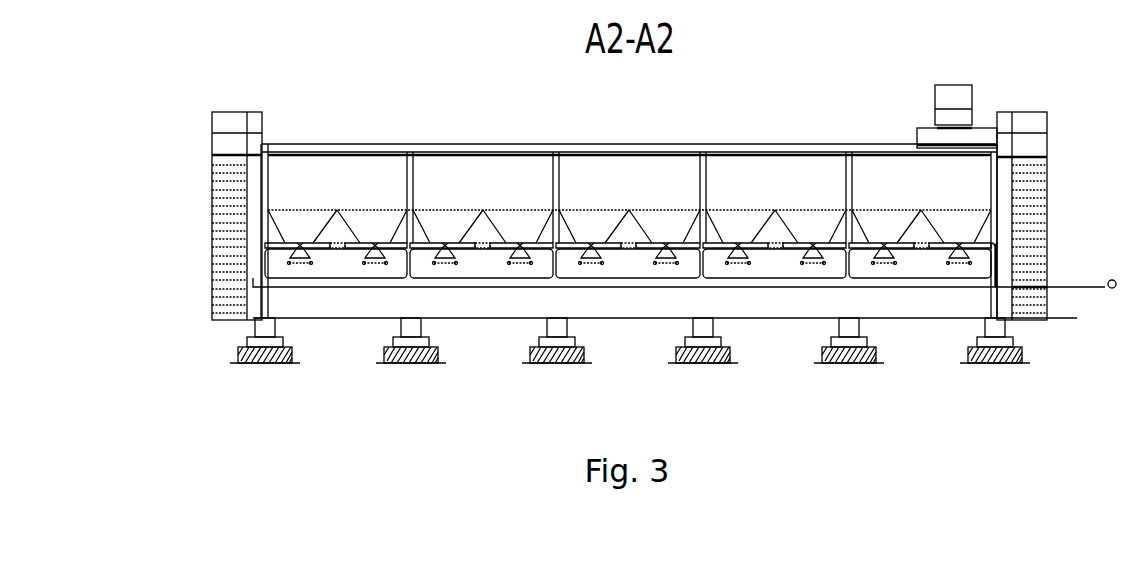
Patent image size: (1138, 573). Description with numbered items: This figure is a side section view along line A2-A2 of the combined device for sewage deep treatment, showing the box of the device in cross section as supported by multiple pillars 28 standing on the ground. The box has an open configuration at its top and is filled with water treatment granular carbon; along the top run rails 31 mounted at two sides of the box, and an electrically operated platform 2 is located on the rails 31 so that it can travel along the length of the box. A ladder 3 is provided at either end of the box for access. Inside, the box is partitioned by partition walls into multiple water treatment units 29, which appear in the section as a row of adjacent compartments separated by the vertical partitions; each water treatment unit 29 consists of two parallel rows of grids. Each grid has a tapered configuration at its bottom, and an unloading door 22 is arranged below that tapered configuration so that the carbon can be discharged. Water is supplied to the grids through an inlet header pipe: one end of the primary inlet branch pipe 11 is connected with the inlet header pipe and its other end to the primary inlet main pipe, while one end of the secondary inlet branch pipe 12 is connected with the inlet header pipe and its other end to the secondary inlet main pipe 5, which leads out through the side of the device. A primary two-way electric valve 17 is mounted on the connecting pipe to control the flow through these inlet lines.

The electrically operated platform 2 is at (953, 102).
The ladder 3 is at (212, 197).
The secondary inlet main pipe 5 is at (1083, 281).
The primary inlet branch pipe 11 is at (562, 243).
The secondary inlet branch pipe 12 is at (715, 243).
The primary two-way electric valve 17 is at (799, 259).
The unloading door 22 is at (667, 263).
The pillar 28 is at (847, 158).
The water treatment unit 29 is at (740, 167).
The rail 31 is at (378, 143).